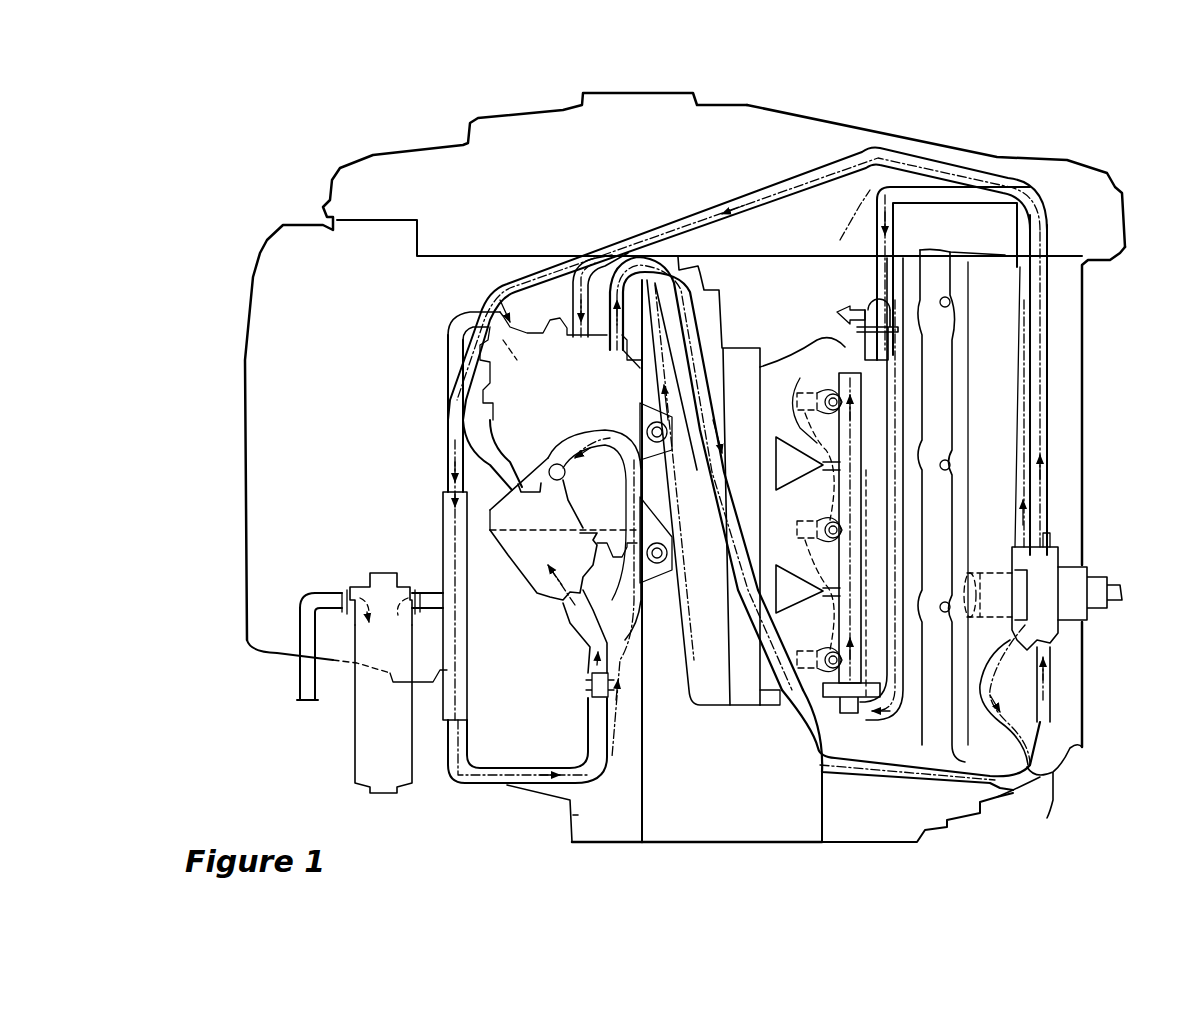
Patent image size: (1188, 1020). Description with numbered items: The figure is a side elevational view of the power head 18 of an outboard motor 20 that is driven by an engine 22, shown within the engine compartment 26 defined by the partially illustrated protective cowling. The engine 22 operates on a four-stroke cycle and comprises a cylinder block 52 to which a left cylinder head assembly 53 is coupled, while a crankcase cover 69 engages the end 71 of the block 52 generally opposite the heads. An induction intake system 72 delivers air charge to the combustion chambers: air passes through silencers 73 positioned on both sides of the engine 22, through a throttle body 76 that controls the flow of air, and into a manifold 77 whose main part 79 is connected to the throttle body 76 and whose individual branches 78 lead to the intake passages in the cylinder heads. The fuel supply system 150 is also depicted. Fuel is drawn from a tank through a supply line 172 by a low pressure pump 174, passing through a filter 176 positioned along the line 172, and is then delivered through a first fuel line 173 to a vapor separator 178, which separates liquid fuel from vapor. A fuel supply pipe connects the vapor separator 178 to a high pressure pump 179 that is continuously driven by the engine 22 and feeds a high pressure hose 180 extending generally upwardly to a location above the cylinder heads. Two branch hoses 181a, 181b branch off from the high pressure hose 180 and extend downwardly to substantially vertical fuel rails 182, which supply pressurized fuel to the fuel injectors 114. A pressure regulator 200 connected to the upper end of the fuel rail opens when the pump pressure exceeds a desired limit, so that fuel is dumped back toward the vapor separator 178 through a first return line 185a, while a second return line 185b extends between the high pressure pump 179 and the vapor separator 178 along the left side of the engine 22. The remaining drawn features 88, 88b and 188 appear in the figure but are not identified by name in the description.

The power head 18 is at (900, 118).
The outboard motor 20 is at (1047, 108).
The engine 22 is at (688, 172).
The engine compartment 26 is at (410, 302).
The cylinder block 52 is at (712, 846).
The left cylinder head assembly 53 is at (870, 845).
The crankcase cover 69 is at (597, 845).
The end 71 is at (641, 820).
The induction intake system 72 is at (777, 292).
The silencers 73 is at (722, 300).
The throttle body 76 is at (742, 347).
The manifold 77 is at (787, 355).
The individual branches 78 is at (848, 345).
The main part 79 is at (772, 380).
The cylinder head cover 88 is at (980, 713).
The cylinder head cover lower portion 88b is at (1067, 713).
The fuel injectors 114 is at (866, 462).
The fuel supply system 150 is at (650, 215).
The supply line 172 is at (307, 708).
The first fuel line 173 is at (448, 345).
The low pressure pump 174 is at (507, 565).
The filter 176 is at (355, 783).
The vapor separator 178 is at (490, 422).
The high pressure pump 179 is at (1075, 567).
The high pressure hose 180 is at (1048, 330).
The branch hose 181a is at (893, 235).
The branch hose 181b is at (845, 220).
The fuel rails 182 is at (880, 540).
The first return line 185a is at (1053, 450).
The second return line 185b is at (1015, 690).
The connector fitting 188 is at (973, 573).
The pressure regulator 200 is at (885, 347).